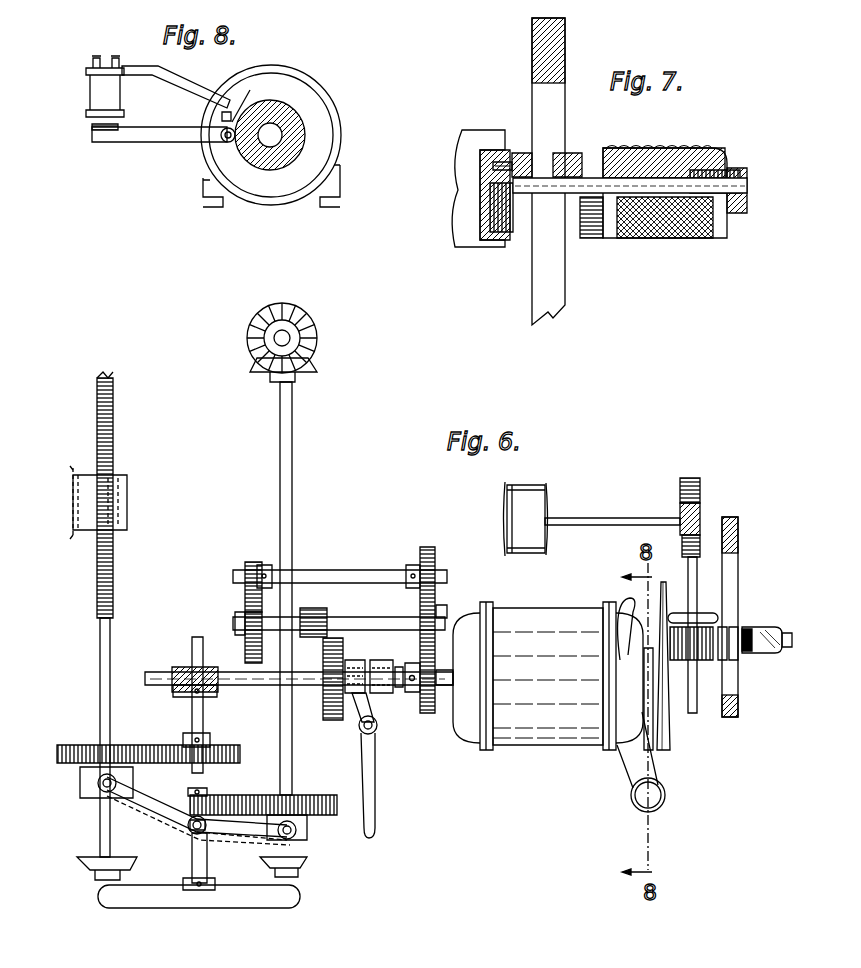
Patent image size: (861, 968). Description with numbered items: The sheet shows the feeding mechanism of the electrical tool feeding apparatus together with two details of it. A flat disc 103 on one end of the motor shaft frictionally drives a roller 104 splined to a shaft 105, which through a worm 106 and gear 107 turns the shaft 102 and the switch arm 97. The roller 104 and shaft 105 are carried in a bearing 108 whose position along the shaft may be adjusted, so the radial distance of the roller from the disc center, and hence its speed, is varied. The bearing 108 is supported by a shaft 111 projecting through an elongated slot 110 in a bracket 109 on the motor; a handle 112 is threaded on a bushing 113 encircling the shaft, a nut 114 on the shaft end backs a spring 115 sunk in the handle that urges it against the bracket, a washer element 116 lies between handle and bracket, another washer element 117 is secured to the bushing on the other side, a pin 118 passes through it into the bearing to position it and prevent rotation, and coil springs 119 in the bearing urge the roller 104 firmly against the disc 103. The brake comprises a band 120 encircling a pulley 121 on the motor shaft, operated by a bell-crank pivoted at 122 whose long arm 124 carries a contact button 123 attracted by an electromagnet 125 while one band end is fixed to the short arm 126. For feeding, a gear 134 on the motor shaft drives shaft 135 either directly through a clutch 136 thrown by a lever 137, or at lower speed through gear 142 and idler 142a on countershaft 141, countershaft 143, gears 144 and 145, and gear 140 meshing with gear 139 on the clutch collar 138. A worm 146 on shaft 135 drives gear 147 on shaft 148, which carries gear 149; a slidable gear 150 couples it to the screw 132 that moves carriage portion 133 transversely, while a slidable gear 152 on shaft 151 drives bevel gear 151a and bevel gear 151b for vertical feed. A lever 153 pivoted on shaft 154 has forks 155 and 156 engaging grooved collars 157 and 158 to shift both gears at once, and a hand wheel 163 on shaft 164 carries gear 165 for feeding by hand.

In FIG. 6, the switch arm 97 is at (528, 488).
In FIG. 6, the shaft 102 is at (592, 517).
In FIG. 6, the flat disc 103 is at (665, 735).
In FIG. 6, the roller 104 is at (668, 615).
In FIG. 6, the shaft 105 is at (696, 566).
In FIG. 6, the worm 106 is at (702, 514).
In FIG. 6, the gear 107 is at (702, 483).
In FIG. 7, the bearing 108 is at (458, 232).
In FIG. 6, the bearing 108 is at (706, 662).
In FIG. 6, the bracket 109 is at (739, 705).
In FIG. 7, the elongated slot 110 is at (548, 171).
In FIG. 6, the elongated slot 110 is at (740, 590).
In FIG. 7, the shaft 111 is at (747, 190).
In FIG. 7, the handle 112 is at (680, 150).
In FIG. 6, the handle 112 is at (764, 628).
In FIG. 7, the bushing 113 is at (606, 150).
In FIG. 7, the nut 114 is at (737, 168).
In FIG. 7, the spring 115 is at (715, 170).
In FIG. 7, the washer element 116 is at (568, 153).
In FIG. 7, the washer element 117 is at (528, 153).
In FIG. 7, the pin 118 is at (500, 160).
In FIG. 7, the coil springs 119 is at (500, 236).
In FIG. 8, the band 120 is at (286, 66).
In FIG. 8, the pulley 121 is at (305, 128).
In FIG. 8, the pivot 122 is at (199, 172).
In FIG. 8, the contact button 123 is at (92, 128).
In FIG. 8, the long arm 124 is at (178, 145).
In FIG. 8, the electromagnet 125 is at (86, 90).
In FIG. 8, the short arm 126 is at (240, 105).
In FIG. 6, the screw 132 is at (115, 428).
In FIG. 6, the portion of the carriage 133 is at (128, 495).
In FIG. 6, the gear 134 is at (428, 714).
In FIG. 6, the shaft 135 is at (275, 686).
In FIG. 6, the clutch 136 is at (404, 654).
In FIG. 6, the lever 137 is at (376, 764).
In FIG. 6, the collar 138 is at (366, 654).
In FIG. 6, the gear 139 is at (333, 696).
In FIG. 6, the gear 140 is at (340, 609).
In FIG. 6, the countershaft 141 is at (376, 617).
In FIG. 6, the gear 142 is at (436, 560).
In FIG. 6, the idler 142a is at (438, 612).
In FIG. 6, the countershaft 143 is at (340, 570).
In FIG. 6, the gear 144 is at (252, 562).
In FIG. 6, the gear 145 is at (246, 640).
In FIG. 6, the worm 146 is at (186, 667).
In FIG. 6, the gear 147 is at (174, 690).
In FIG. 6, the shaft 148 is at (205, 718).
In FIG. 6, the gear 149 is at (258, 755).
In FIG. 6, the gear 150 is at (185, 745).
In FIG. 6, the shaft 151 is at (293, 462).
In FIG. 6, the bevel gear 151a is at (318, 360).
In FIG. 6, the bevel gear 151b is at (312, 316).
In FIG. 6, the gear 152 is at (340, 787).
In FIG. 6, the lever 153 is at (214, 832).
In FIG. 6, the shaft 154 is at (190, 831).
In FIG. 6, the fork 155 is at (125, 802).
In FIG. 6, the fork 156 is at (258, 840).
In FIG. 6, the collar 157 is at (80, 795).
In FIG. 6, the collar 158 is at (300, 834).
In FIG. 6, the hand wheel 163 is at (246, 908).
In FIG. 6, the shaft 164 is at (192, 860).
In FIG. 6, the gear 165 is at (225, 797).